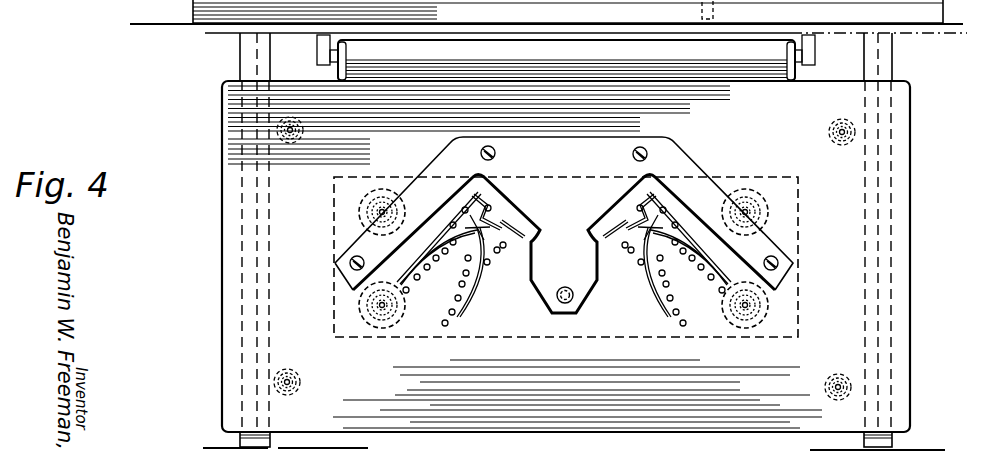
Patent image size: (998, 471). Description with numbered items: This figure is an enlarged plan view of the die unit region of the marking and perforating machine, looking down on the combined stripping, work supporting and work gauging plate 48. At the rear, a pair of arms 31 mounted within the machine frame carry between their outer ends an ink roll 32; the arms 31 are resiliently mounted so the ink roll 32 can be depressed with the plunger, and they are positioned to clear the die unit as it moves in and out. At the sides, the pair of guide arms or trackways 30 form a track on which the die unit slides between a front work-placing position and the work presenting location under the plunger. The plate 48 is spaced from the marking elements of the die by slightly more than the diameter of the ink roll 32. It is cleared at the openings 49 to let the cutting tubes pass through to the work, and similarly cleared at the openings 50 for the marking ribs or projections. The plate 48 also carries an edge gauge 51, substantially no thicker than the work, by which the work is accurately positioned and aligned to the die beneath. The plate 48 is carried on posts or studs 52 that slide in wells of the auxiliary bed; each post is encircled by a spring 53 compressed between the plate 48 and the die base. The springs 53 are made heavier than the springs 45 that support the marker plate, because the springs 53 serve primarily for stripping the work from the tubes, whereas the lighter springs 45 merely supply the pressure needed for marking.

The guide arms or trackways 30 is at (237, 438).
The arms 31 is at (322, 52).
The ink roll 32 is at (745, 68).
The springs 45 is at (752, 195).
The combined stripping, work supporting and work gauging plate 48 is at (905, 125).
The clearances for cutting tubes 49 is at (488, 265).
The clearances for marking ribs 50 is at (465, 312).
The edge gauge 51 is at (675, 160).
The posts or studs 52 is at (278, 128).
The springs 53 is at (277, 136).